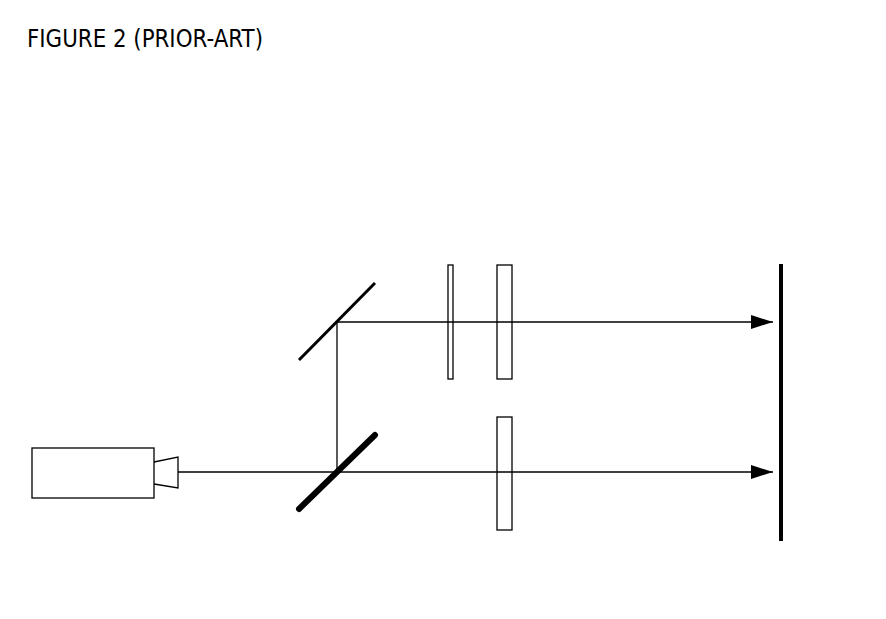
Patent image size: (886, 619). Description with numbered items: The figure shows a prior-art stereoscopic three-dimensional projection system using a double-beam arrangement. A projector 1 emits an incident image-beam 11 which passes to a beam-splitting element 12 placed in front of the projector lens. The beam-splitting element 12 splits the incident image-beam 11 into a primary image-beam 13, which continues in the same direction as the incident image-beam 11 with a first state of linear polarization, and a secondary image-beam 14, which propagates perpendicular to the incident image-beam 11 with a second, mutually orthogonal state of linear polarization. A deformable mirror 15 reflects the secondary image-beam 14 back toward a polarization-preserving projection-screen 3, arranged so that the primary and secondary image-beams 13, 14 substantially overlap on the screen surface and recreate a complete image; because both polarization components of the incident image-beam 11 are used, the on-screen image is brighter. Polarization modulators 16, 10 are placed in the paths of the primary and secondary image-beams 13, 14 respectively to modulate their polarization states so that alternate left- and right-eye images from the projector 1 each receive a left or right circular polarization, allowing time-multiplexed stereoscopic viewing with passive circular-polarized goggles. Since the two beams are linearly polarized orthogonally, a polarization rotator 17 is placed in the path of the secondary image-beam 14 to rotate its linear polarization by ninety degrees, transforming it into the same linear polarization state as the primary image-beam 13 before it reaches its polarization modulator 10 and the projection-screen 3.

The projector 1 is at (88, 440).
The incident image-beam 11 is at (247, 466).
The beam-splitting element 12 is at (316, 508).
The primary image-beam 13 is at (431, 478).
The secondary image-beam 14 is at (342, 394).
The deformable mirror 15 is at (310, 340).
The polarization rotator 17 is at (443, 278).
The polarization modulator 10 is at (517, 278).
The polarization modulator 16 is at (517, 517).
The polarization-preserving projection-screen 3 is at (790, 278).